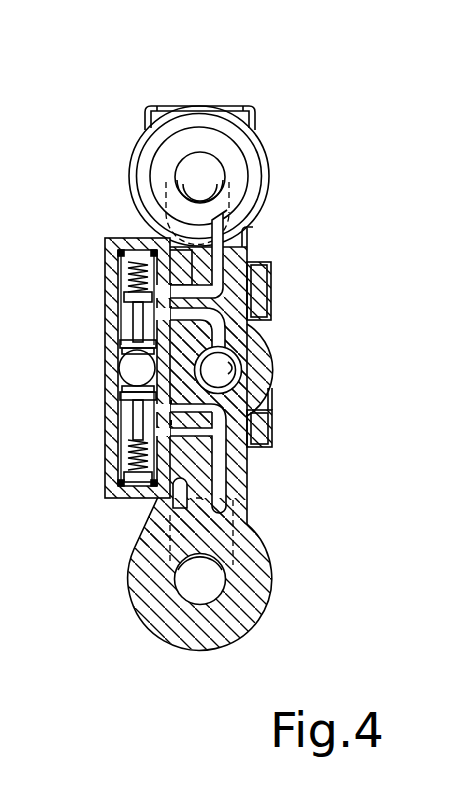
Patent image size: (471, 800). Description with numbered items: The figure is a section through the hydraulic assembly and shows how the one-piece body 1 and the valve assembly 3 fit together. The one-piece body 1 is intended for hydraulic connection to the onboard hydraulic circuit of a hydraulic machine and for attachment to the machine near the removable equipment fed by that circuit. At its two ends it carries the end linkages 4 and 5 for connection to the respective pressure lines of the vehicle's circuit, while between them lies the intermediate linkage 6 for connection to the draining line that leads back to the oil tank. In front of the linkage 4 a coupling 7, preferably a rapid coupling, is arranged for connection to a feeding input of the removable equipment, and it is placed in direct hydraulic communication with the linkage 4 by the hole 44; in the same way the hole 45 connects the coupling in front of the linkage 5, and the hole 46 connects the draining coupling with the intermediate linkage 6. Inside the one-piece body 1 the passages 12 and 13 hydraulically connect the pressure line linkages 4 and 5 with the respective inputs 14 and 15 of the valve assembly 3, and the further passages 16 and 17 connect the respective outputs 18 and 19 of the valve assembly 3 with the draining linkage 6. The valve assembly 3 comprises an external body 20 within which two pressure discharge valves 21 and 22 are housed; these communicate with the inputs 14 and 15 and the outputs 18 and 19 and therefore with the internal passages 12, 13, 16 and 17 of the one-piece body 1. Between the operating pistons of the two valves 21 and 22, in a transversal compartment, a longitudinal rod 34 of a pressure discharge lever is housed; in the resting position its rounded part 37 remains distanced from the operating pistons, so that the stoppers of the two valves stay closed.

The one-piece body 1 is at (270, 376).
The valve assembly 3 is at (90, 381).
The end linkage 4 is at (225, 137).
The end linkage 5 is at (246, 602).
The intermediate linkage 6 is at (273, 413).
The coupling 7 is at (265, 167).
The passage 12 is at (242, 250).
The passage 13 is at (236, 478).
The input 14 is at (243, 258).
The input 15 is at (240, 458).
The passage 16 is at (247, 341).
The passage 17 is at (248, 437).
The output 18 is at (252, 288).
The output 19 is at (113, 425).
The external body 20 is at (110, 319).
The pressure discharge valve 21 is at (93, 295).
The pressure discharge valve 22 is at (83, 431).
The longitudinal rod 34 is at (135, 365).
The rounded part 37 is at (110, 347).
The hole 44 is at (178, 163).
The hole 45 is at (195, 588).
The hole 46 is at (230, 376).